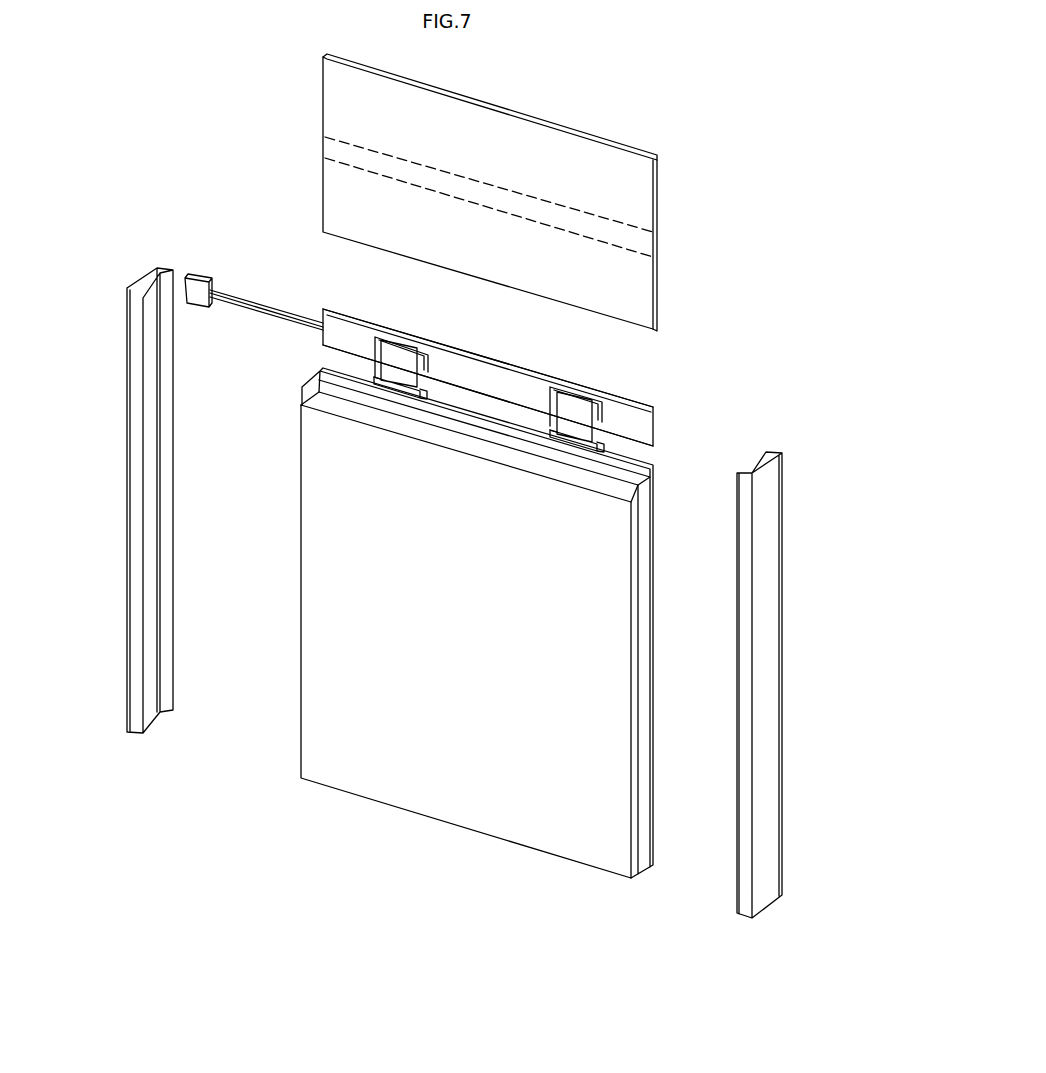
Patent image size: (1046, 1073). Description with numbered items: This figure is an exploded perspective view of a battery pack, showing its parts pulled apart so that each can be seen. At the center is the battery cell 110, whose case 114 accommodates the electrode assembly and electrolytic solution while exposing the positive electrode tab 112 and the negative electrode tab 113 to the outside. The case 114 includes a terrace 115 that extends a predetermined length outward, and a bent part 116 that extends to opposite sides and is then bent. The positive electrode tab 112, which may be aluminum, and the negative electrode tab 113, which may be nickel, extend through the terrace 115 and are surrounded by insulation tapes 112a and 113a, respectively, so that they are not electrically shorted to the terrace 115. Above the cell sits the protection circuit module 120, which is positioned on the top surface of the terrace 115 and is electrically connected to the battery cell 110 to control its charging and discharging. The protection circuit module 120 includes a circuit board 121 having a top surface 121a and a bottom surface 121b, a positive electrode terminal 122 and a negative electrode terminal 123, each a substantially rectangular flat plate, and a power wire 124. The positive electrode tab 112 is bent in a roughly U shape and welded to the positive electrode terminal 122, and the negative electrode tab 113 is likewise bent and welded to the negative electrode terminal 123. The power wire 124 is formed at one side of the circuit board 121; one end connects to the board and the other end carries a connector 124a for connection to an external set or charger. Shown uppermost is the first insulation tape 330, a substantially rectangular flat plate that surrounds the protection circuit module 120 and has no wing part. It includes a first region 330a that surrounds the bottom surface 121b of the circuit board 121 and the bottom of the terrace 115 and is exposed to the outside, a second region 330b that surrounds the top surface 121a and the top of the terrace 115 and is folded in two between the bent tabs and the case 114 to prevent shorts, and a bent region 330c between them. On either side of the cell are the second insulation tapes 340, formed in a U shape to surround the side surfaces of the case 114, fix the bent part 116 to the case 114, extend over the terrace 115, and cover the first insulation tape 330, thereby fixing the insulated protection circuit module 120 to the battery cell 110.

The battery cell 110 is at (479, 644).
The positive electrode tab 112 is at (400, 353).
The insulation tape 112a is at (372, 380).
The negative electrode tab 113 is at (573, 407).
The insulation tape 113a is at (547, 430).
The case 114 is at (447, 812).
The terrace 115 is at (641, 466).
The bent part 116 is at (301, 371).
The protection circuit module 120 is at (465, 334).
The circuit board 121 is at (534, 367).
The top surface of the circuit board 121a is at (643, 432).
The bottom surface of the circuit board 121b is at (658, 406).
The positive electrode terminal 122 is at (426, 355).
The negative electrode terminal 123 is at (597, 400).
The power wire 124 is at (243, 312).
The connector 124a is at (198, 285).
The first insulation tape 330 is at (554, 192).
The first region 330a is at (735, 205).
The second region 330b is at (648, 213).
The bent region 330c is at (648, 244).
The second insulation tape 340 is at (127, 538).